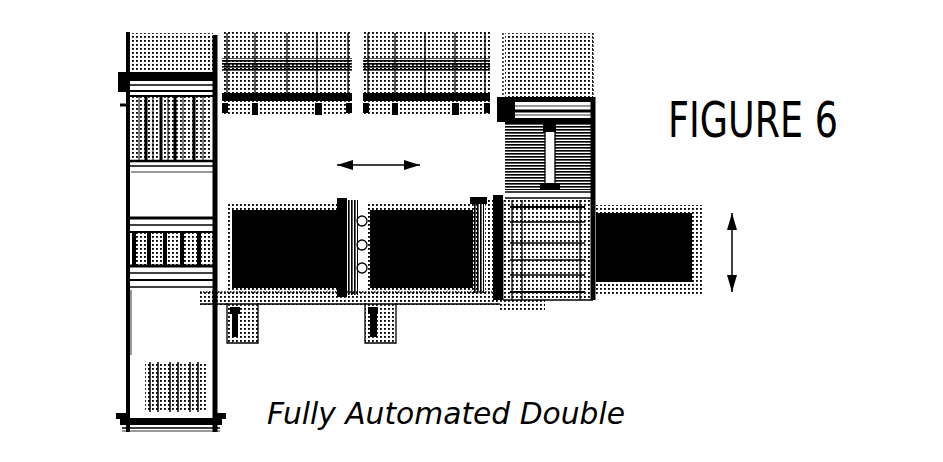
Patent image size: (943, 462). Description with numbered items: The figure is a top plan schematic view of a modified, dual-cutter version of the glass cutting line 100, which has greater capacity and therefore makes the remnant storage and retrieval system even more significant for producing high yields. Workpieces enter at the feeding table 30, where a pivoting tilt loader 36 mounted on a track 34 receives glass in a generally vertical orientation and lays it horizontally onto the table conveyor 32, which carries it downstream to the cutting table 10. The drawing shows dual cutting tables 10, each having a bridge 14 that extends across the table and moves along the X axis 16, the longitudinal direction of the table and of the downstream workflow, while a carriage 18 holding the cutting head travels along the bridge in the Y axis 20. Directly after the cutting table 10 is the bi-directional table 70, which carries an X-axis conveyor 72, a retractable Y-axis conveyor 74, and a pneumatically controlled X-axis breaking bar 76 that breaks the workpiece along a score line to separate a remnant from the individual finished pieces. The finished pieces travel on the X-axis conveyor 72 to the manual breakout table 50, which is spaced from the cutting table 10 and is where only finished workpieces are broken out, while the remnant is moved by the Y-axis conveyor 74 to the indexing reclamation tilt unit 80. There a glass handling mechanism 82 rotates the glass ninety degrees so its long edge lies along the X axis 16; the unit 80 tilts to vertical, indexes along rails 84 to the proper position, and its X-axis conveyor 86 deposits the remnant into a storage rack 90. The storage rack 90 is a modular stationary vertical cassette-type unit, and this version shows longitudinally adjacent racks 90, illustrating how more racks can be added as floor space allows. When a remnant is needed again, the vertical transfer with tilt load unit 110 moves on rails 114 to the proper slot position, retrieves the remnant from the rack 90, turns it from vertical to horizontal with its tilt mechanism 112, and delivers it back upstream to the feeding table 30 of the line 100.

The cutting table 10 is at (300, 310).
The bridge 14 is at (340, 205).
The X axis 16 is at (383, 158).
The carriage 18 is at (347, 207).
The Y axis 20 is at (735, 250).
The feeding table 30 is at (126, 236).
The table conveyor 32 is at (148, 222).
The track 34 is at (126, 327).
The pivoting tilt loader 36 is at (147, 400).
The breakout table 50 is at (668, 285).
The bi-directional table 70 is at (577, 305).
The X-axis conveyor 72 is at (535, 300).
The retractable Y-axis conveyor 74 is at (594, 207).
The X-axis breaking bar 76 is at (600, 163).
The indexing reclamation tilt unit 80 is at (600, 140).
The glass handling mechanism 82 is at (552, 97).
The rails 84 is at (600, 78).
The X-axis conveyor 86 is at (517, 97).
The storage rack 90 is at (295, 63).
The cutting line 100 is at (700, 50).
The vertical transfer with tilt load unit 110 is at (126, 142).
The tilt mechanism 112 is at (167, 166).
The rails 114 is at (126, 56).